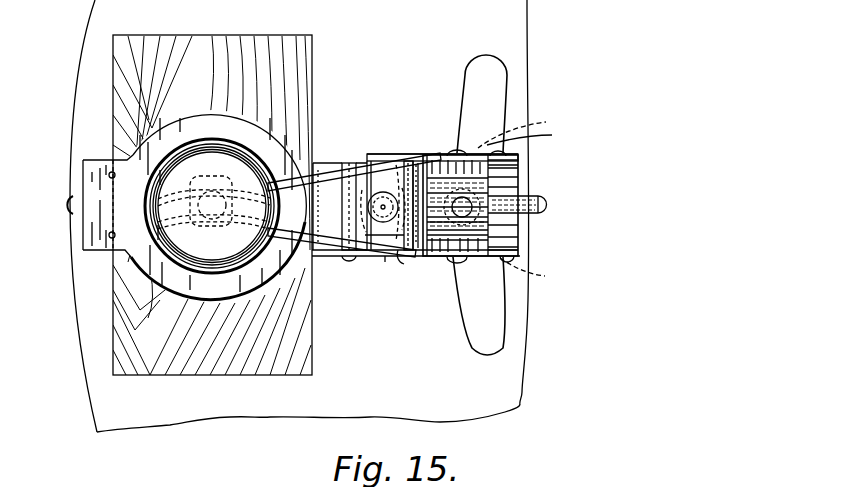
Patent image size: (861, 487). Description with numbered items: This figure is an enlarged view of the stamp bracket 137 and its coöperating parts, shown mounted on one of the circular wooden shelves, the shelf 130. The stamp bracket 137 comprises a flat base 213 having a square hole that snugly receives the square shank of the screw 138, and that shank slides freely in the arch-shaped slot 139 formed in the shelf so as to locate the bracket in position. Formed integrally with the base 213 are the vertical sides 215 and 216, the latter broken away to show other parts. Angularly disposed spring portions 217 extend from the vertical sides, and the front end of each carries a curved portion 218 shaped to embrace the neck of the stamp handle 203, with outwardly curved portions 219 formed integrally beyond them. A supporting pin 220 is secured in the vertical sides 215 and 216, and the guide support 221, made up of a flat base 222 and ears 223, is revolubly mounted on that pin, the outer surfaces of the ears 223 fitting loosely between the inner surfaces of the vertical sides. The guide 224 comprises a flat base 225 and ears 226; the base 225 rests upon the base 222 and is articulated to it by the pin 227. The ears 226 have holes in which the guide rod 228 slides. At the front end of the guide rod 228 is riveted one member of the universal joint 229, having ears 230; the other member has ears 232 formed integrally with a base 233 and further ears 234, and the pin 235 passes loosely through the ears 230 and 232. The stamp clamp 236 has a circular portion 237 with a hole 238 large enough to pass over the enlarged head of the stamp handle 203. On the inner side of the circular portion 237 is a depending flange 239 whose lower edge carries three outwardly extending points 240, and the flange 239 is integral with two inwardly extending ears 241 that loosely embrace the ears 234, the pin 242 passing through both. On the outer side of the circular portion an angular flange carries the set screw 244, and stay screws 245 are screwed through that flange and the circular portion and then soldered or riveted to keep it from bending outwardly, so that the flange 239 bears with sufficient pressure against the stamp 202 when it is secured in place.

The shelf 130 is at (427, 85).
The stamp bracket 137 is at (410, 162).
The screw 138 is at (493, 170).
The slot 139 is at (506, 104).
The stamp 202 is at (313, 335).
The stamp handle 203 is at (212, 206).
The flat base 213 is at (490, 245).
The vertical side 215 is at (530, 137).
The vertical side 216 is at (493, 258).
The spring portion 217 is at (380, 162).
The curved portion 218 is at (224, 186).
The outwardly curved portion 219 is at (189, 193).
The supporting pin 220 is at (458, 263).
The guide support 221 is at (470, 232).
The flat base 222 is at (490, 162).
The ear 223 is at (546, 124).
The guide 224 is at (470, 220).
The flat base 225 is at (470, 186).
The ear 226 is at (466, 196).
The pin 227 is at (547, 203).
The guide rod 228 is at (546, 211).
The universal joint 229 is at (392, 268).
The ear 230 is at (408, 160).
The ear 232 is at (378, 160).
The base 233 is at (375, 160).
The ear 234 is at (370, 157).
The pin 235 is at (384, 192).
The stamp clamp 236 is at (83, 160).
The circular portion 237 is at (218, 209).
The hole 238 is at (221, 122).
The depending flange 239 is at (341, 206).
The point 240 is at (311, 139).
The ear 241 is at (320, 168).
The pin 242 is at (342, 192).
The set screw 244 is at (72, 207).
The stay screw 245 is at (110, 172).